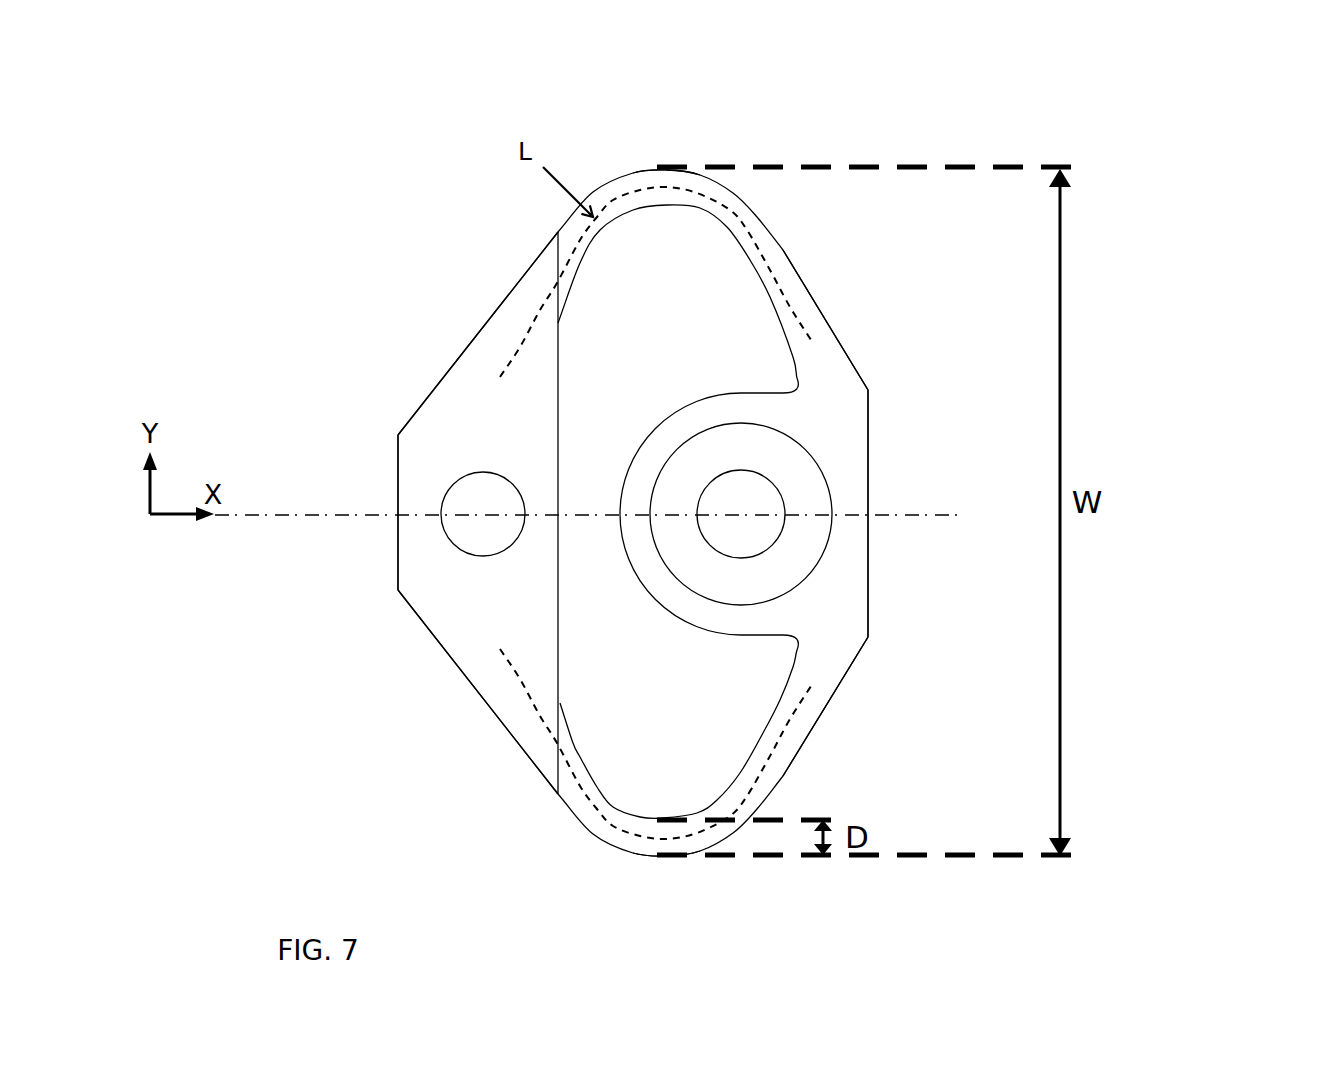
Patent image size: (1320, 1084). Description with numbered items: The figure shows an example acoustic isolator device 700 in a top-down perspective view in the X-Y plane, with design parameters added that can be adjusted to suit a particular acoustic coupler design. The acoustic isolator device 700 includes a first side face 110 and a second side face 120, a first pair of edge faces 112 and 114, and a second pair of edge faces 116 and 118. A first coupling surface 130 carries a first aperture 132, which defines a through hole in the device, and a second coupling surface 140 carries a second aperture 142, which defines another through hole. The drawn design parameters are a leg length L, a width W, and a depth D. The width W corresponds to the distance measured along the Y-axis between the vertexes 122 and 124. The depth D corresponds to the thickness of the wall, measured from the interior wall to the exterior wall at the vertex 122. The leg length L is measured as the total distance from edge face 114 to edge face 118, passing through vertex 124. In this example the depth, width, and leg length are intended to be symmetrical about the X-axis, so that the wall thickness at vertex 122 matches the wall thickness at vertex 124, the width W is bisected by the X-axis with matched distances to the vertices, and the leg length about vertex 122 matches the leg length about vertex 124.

The acoustic isolator device 700 is at (1148, 78).
The first side face 110 is at (376, 476).
The edge face 112 is at (440, 684).
The edge face 114 is at (440, 352).
The edge face 116 is at (865, 681).
The edge face 118 is at (836, 308).
The second side face 120 is at (892, 462).
The vertex 122 is at (669, 877).
The vertex 124 is at (661, 153).
The first coupling surface 130 is at (437, 440).
The first aperture 132 is at (437, 543).
The second coupling surface 140 is at (813, 423).
The second aperture 142 is at (788, 477).